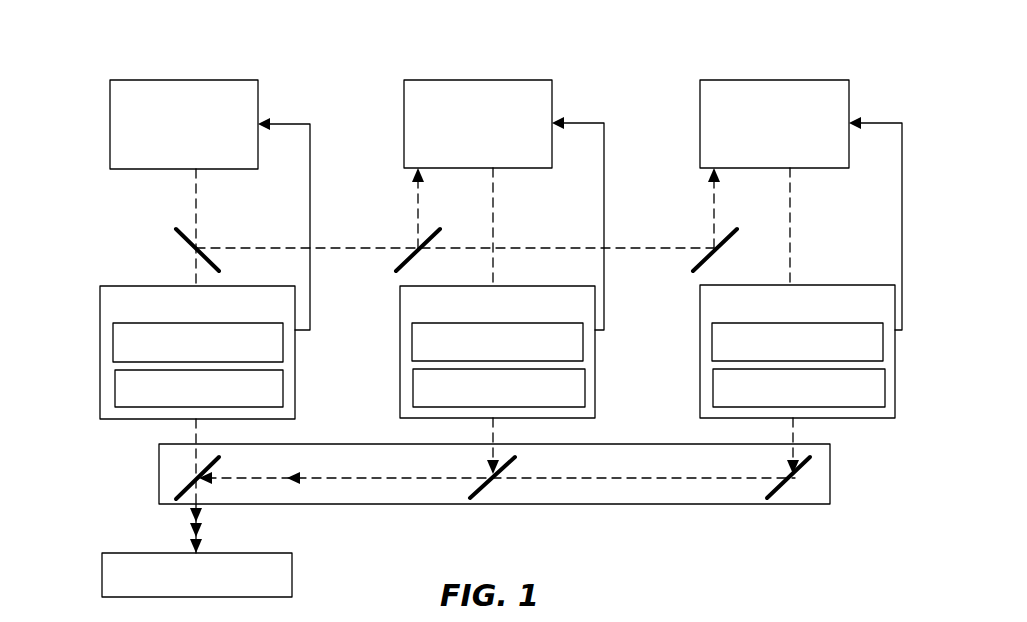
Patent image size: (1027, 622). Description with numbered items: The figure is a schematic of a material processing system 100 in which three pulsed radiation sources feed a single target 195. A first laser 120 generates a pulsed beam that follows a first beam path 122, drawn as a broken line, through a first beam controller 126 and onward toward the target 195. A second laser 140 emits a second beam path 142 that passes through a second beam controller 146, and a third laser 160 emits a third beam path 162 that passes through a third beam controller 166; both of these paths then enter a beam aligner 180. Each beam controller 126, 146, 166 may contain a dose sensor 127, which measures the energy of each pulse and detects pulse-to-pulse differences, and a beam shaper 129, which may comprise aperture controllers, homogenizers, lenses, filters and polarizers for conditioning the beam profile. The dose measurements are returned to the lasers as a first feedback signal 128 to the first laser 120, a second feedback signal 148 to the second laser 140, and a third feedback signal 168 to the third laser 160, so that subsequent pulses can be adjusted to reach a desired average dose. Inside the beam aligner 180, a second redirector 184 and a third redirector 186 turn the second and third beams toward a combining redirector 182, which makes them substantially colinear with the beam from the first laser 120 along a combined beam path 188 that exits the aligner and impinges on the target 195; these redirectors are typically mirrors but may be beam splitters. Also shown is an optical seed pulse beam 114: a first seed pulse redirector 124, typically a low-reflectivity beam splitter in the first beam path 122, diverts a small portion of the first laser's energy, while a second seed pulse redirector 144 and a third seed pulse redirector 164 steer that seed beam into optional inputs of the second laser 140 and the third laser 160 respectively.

The material processing system 100 is at (106, 48).
The optical seed pulse beam 114 is at (380, 247).
The first laser 120 is at (202, 80).
The first beam path 122 is at (197, 208).
The first seed pulse redirector 124 is at (188, 251).
The first beam controller 126 is at (101, 326).
The dose sensor 127 is at (498, 342).
The first feedback signal 128 is at (295, 123).
The beam shaper 129 is at (500, 388).
The second laser 140 is at (490, 80).
The second beam path 142 is at (495, 208).
The second seed pulse redirector 144 is at (413, 260).
The second beam controller 146 is at (400, 330).
The second feedback signal 148 is at (583, 123).
The third laser 160 is at (783, 78).
The third beam path 162 is at (790, 207).
The third seed pulse redirector 164 is at (708, 255).
The third beam controller 166 is at (700, 322).
The third feedback signal 168 is at (878, 122).
The beam aligner 180 is at (830, 481).
The combining redirector 182 is at (187, 487).
The second redirector 184 is at (480, 487).
The third redirector 186 is at (777, 489).
The combined beam path 188 is at (194, 542).
The target 195 is at (292, 575).